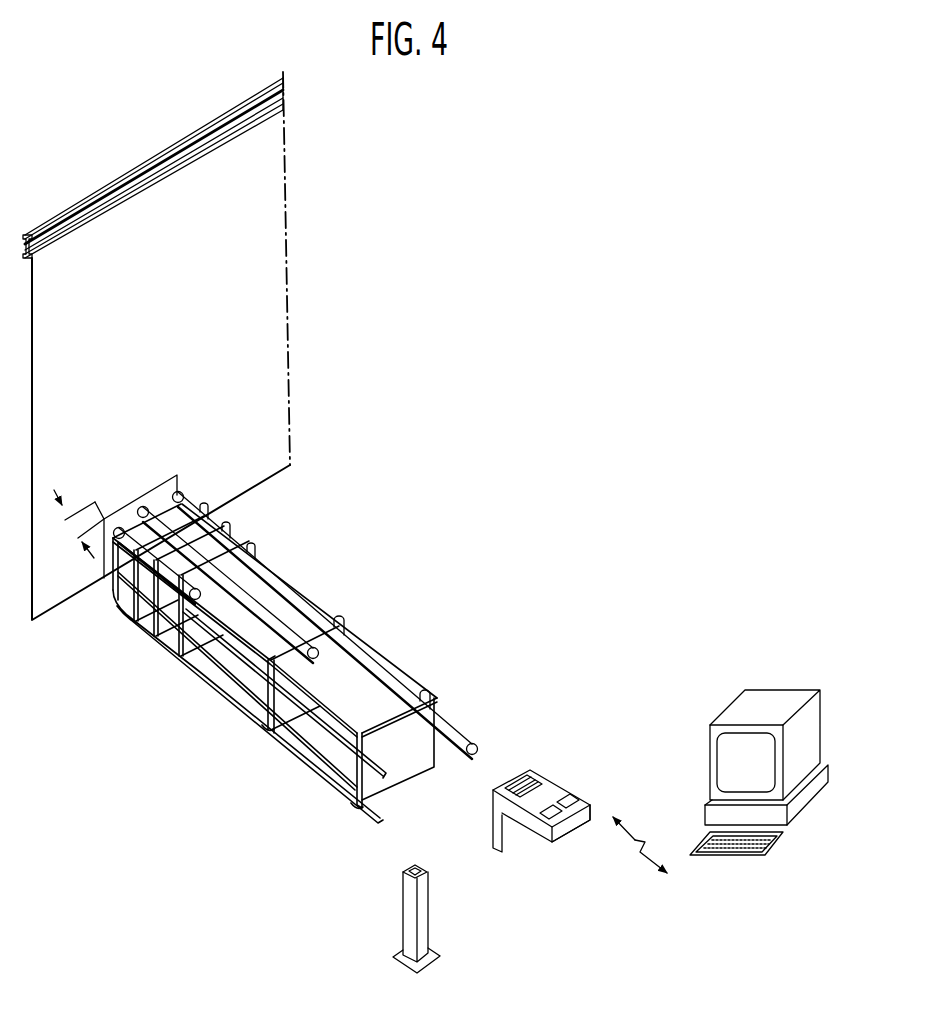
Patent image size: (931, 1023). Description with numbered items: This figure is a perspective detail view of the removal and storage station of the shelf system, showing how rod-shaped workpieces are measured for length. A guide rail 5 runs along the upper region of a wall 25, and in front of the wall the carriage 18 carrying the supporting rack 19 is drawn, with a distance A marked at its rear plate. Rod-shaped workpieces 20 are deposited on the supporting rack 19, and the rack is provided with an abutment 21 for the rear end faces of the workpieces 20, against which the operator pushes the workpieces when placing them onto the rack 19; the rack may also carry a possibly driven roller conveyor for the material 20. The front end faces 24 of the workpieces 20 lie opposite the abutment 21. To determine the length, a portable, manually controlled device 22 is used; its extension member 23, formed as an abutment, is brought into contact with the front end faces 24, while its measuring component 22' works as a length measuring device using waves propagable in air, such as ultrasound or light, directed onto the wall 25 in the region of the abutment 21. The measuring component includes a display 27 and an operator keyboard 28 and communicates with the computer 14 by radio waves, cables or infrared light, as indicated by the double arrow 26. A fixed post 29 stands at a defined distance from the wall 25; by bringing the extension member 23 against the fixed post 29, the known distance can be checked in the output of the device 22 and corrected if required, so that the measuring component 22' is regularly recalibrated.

The guide rail 5 is at (285, 92).
The wall 25 is at (270, 243).
The carriage frame 18 is at (396, 618).
The abutment 21 is at (153, 495).
The distance A is at (73, 524).
The front end faces 24 is at (320, 664).
The rod-shaped workpieces 20 is at (287, 594).
The supporting rack 19 is at (290, 719).
The manually controlled device 22 is at (541, 839).
The extension member 23 is at (493, 848).
The display 27 is at (532, 783).
The measuring component 22' is at (579, 775).
The operator keyboard 28 is at (576, 830).
The double arrow 26 is at (633, 837).
The computer 14 is at (777, 697).
The fixed post 29 is at (405, 915).